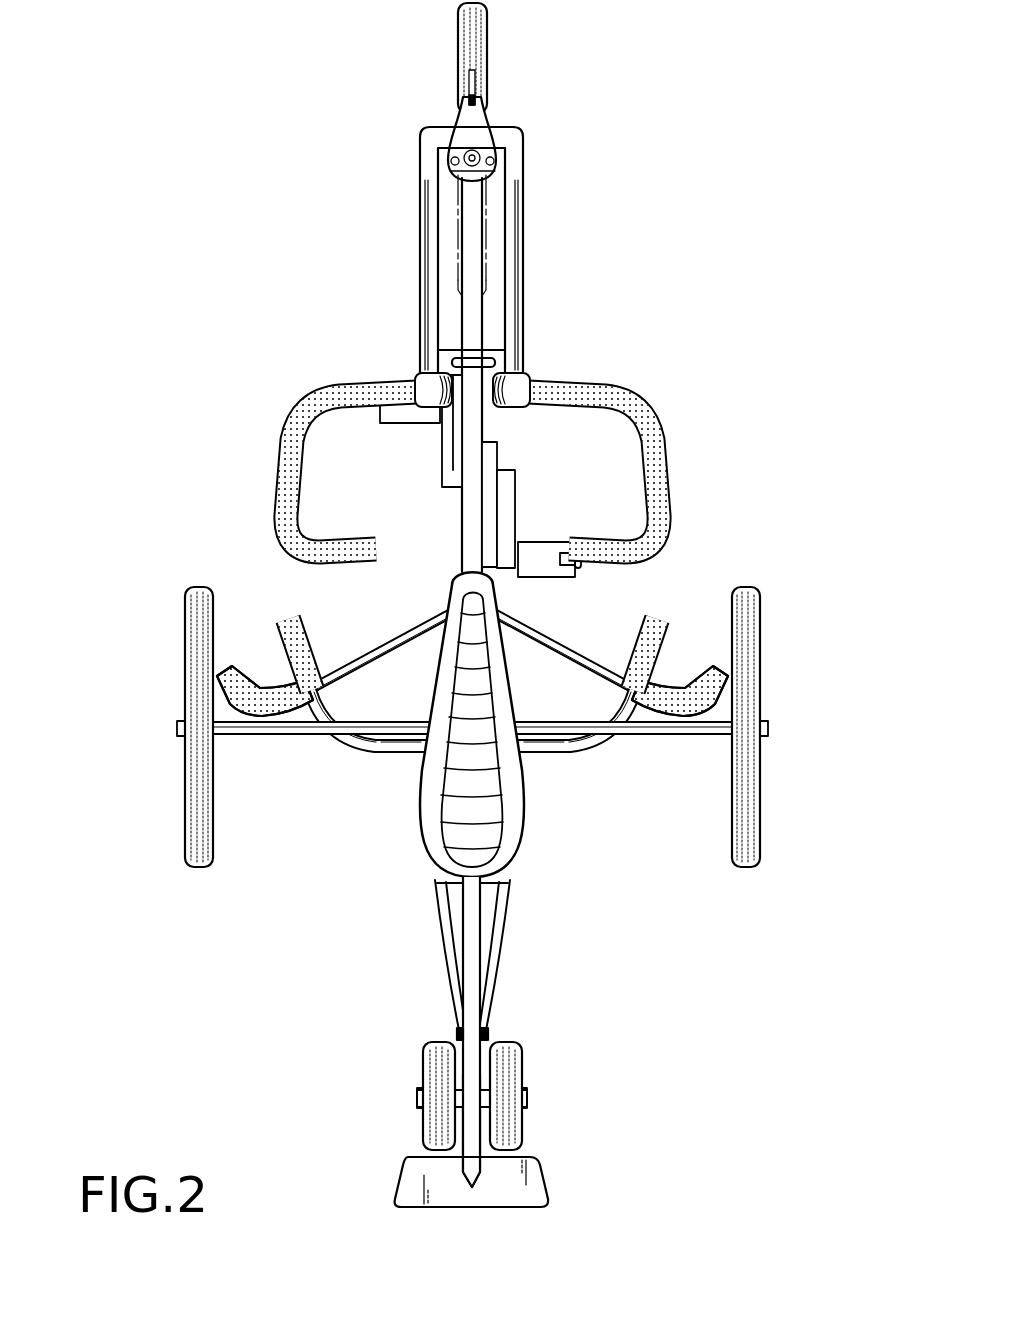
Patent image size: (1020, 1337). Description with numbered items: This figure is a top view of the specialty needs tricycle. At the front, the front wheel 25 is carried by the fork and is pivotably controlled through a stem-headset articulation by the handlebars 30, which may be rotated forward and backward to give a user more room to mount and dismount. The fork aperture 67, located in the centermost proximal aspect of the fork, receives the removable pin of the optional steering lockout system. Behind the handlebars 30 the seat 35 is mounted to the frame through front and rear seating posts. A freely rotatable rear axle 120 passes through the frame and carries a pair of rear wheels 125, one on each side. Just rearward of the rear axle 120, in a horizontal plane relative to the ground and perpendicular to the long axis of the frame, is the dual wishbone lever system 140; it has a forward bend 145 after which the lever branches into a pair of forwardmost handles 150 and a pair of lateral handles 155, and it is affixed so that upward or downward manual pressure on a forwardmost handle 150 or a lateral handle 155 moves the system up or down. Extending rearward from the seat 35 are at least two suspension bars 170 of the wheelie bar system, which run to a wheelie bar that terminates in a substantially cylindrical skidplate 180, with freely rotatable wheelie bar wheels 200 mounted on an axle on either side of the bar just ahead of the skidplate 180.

The front wheel 25 is at (489, 32).
The fork aperture 67 is at (475, 125).
The handlebars 30 is at (650, 460).
The dual wishbone lever system 140 is at (348, 676).
The forward bend 145 is at (338, 748).
The rear axle 120 is at (683, 735).
The lateral handles 155 is at (230, 668).
The forwardmost handles 150 is at (308, 640).
The rear wheels 125 is at (198, 870).
The seat 35 is at (523, 800).
The suspension bars 170 is at (478, 888).
The wheelie bar wheels 200 is at (440, 1040).
The skidplate 180 is at (550, 1183).